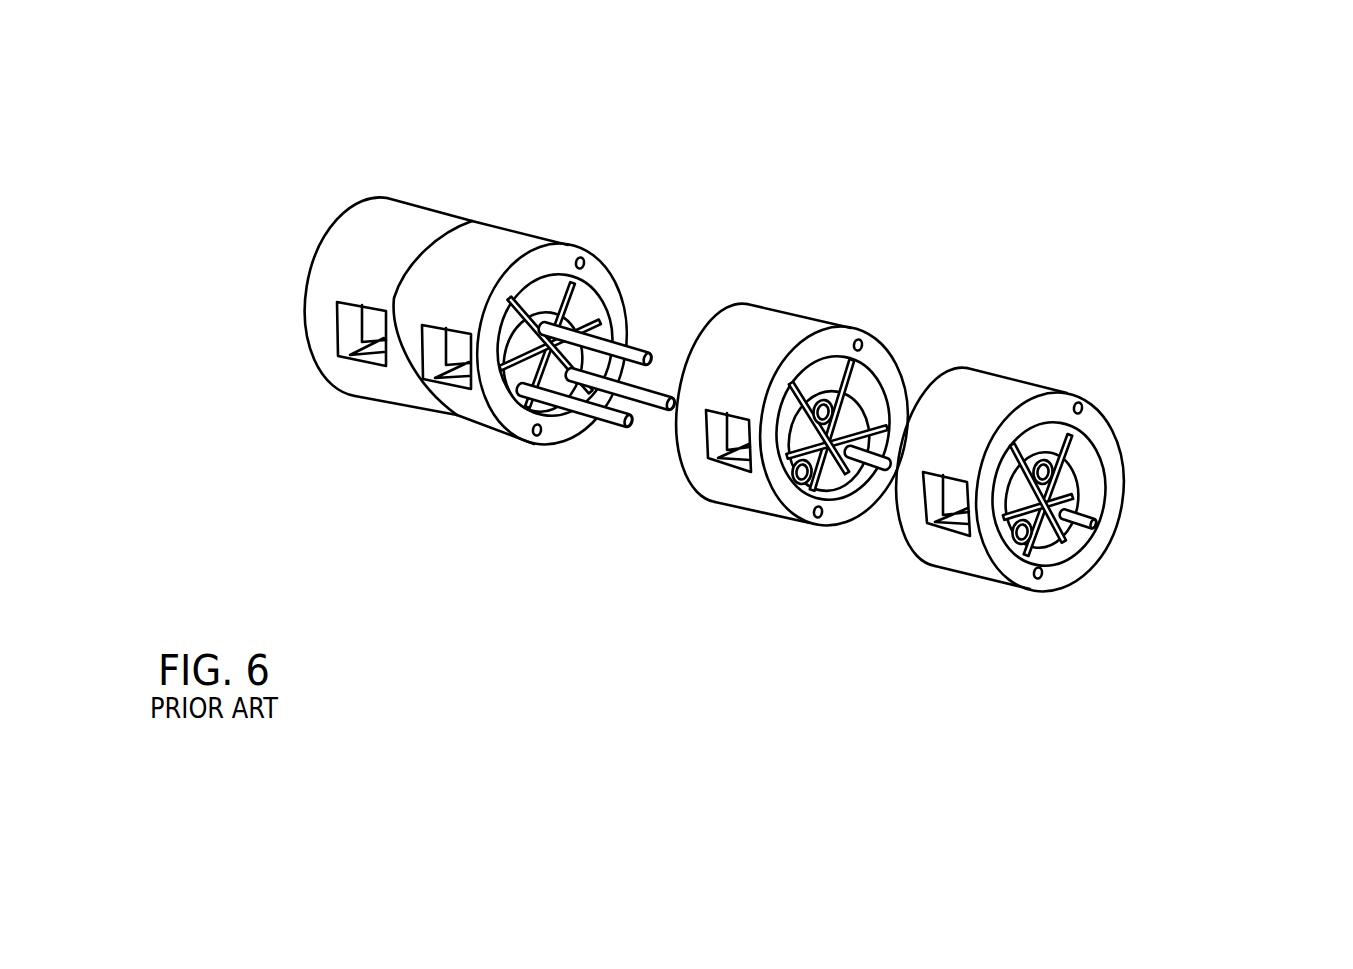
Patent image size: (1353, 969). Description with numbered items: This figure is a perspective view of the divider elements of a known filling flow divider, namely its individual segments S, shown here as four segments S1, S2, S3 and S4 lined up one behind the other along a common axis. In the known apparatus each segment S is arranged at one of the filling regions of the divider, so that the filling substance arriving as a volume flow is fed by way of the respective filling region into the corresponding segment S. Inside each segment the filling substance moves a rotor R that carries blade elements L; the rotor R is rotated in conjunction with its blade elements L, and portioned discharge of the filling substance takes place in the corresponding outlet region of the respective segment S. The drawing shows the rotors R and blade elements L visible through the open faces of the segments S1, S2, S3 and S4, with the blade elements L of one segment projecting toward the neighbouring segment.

The segment S is at (456, 138).
The first segment S1 is at (433, 216).
The second segment S2 is at (523, 230).
The third segment S3 is at (797, 315).
The fourth segment S4 is at (1018, 385).
The blade element L is at (360, 332).
The rotor R is at (373, 318).